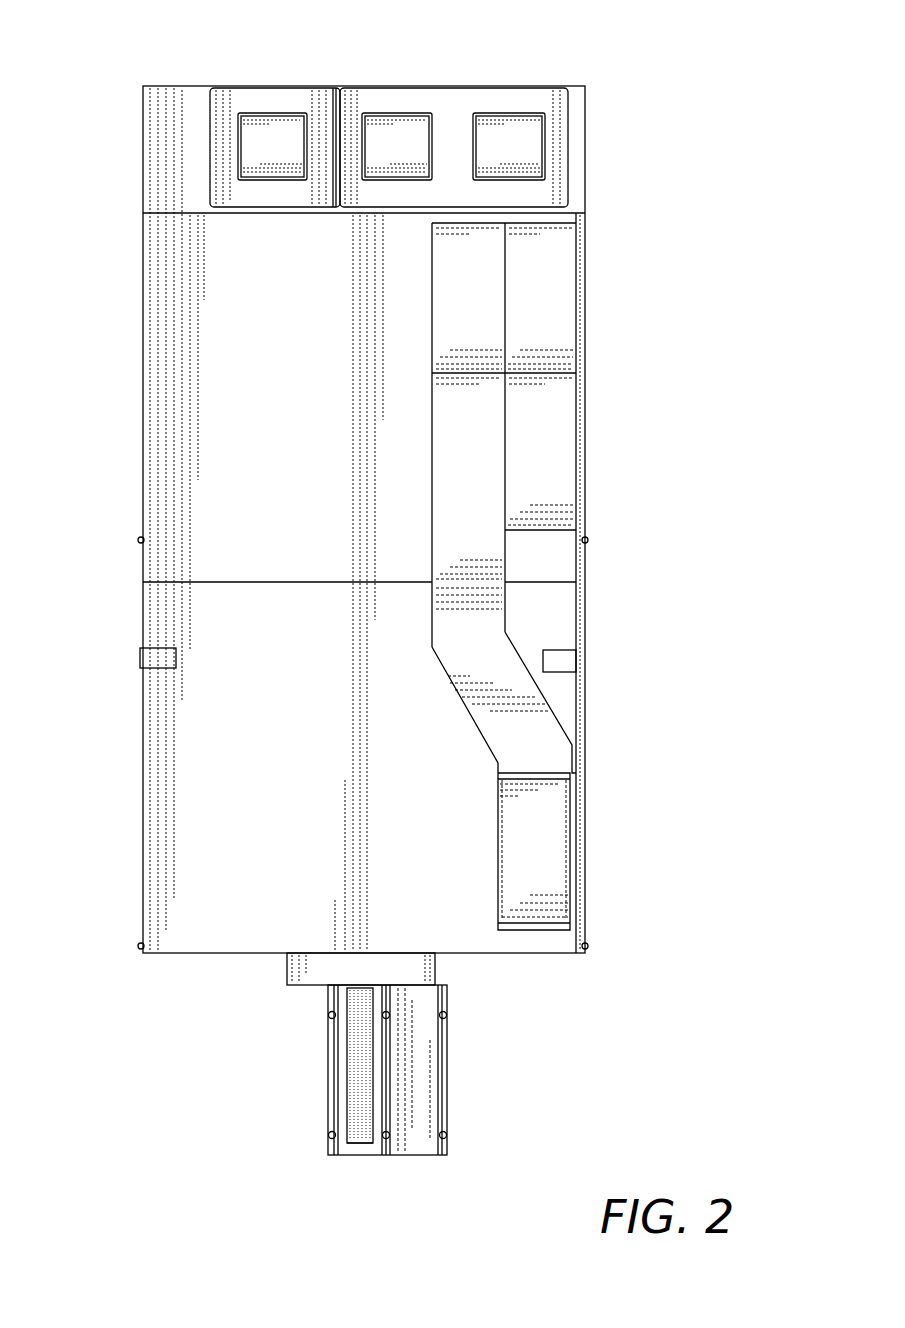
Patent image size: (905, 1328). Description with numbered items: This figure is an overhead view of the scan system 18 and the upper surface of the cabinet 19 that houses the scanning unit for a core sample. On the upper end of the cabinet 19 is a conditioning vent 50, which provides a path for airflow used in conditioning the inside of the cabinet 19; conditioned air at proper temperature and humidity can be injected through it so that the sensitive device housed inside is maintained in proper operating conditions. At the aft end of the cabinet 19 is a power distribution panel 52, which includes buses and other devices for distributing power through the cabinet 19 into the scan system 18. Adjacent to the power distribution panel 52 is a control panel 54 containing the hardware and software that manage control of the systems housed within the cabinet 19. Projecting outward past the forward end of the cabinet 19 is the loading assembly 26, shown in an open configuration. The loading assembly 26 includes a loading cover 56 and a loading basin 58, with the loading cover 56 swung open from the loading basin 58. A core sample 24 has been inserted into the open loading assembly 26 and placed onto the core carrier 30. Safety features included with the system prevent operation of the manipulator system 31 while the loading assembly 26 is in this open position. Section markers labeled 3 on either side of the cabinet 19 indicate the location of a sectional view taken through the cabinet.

The scan system 18 is at (652, 192).
The cabinet 19 is at (582, 390).
The conditioning vent 50 is at (535, 720).
The power distribution panel 52 is at (468, 73).
The control panel 54 is at (273, 73).
The loading assembly 26 is at (482, 1025).
The core carrier 30 is at (328, 1048).
The manipulator system 31 is at (270, 1095).
The loading cover 56 is at (427, 1100).
The loading basin 58 is at (328, 1122).
The core sample 24 is at (358, 1145).
The section line 3- 3 is at (97, 523).